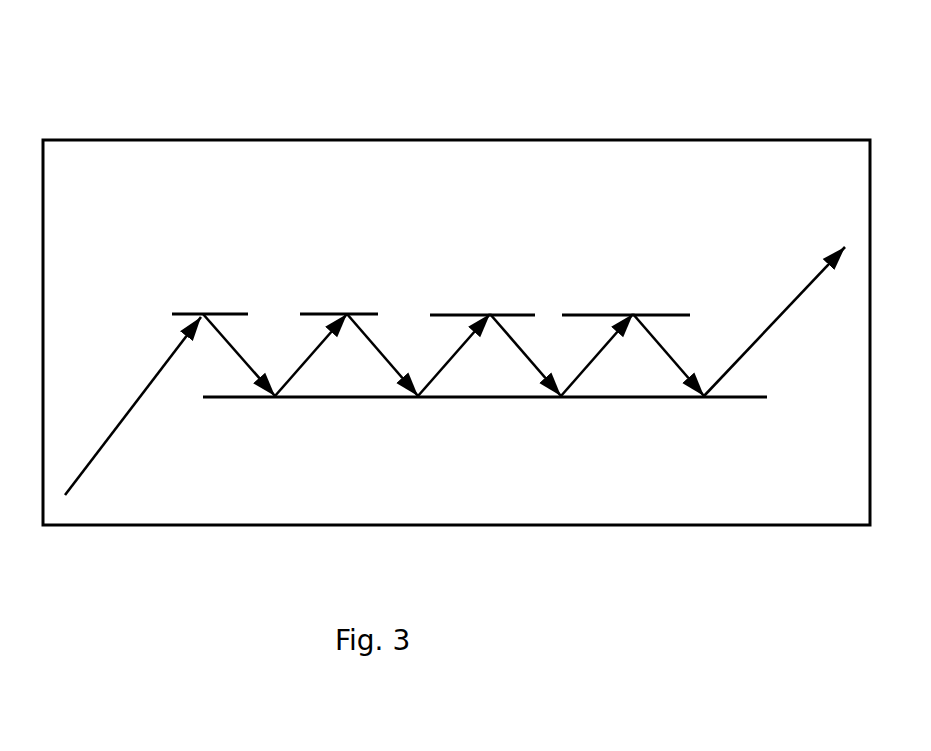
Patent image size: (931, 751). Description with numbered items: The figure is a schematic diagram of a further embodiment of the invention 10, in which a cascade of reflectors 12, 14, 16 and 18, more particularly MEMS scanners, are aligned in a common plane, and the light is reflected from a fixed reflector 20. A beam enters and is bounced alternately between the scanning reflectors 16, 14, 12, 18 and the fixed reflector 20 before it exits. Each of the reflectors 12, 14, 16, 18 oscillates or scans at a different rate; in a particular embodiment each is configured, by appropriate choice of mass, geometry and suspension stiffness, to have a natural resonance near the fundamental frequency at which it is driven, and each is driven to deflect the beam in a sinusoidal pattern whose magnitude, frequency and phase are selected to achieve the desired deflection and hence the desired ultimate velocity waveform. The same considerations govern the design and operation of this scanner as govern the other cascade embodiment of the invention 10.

The invention 10 is at (494, 126).
The reflector 12 is at (520, 315).
The reflector 14 is at (365, 313).
The reflector 16 is at (222, 313).
The reflector 18 is at (668, 316).
The fixed reflector 20 is at (610, 397).